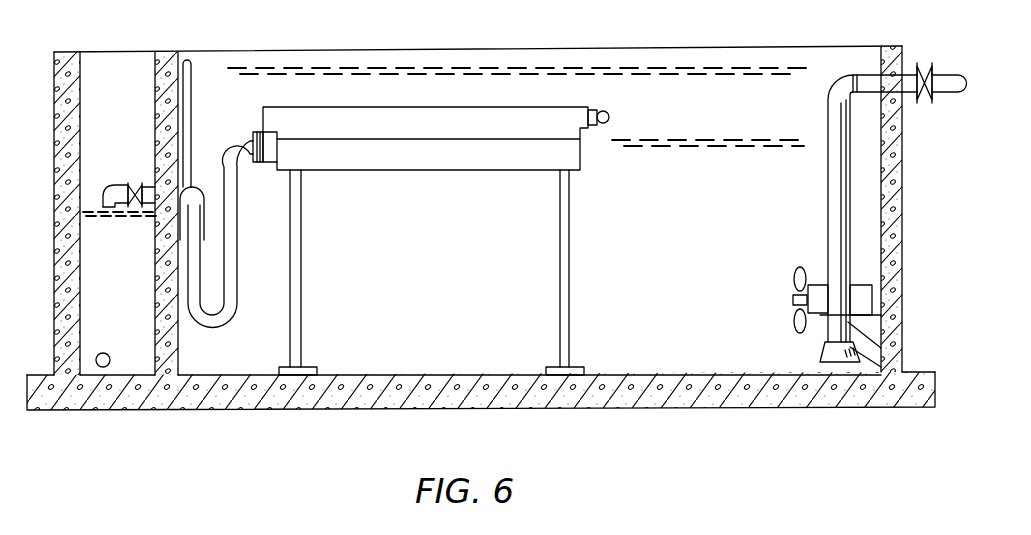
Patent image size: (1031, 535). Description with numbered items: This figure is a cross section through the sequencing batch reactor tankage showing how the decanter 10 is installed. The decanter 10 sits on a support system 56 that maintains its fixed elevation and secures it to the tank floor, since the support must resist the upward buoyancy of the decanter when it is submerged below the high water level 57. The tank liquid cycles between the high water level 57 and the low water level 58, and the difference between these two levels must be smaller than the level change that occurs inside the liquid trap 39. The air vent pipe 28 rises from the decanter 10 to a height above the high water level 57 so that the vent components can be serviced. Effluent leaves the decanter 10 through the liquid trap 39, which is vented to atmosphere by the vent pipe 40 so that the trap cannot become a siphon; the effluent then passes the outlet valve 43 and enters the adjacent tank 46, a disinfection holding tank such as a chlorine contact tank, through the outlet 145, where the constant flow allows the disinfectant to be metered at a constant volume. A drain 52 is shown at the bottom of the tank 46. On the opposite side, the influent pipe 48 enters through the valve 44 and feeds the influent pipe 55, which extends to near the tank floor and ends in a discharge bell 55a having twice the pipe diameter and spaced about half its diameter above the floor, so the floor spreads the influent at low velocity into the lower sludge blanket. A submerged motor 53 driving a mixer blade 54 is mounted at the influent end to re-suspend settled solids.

The decanter 10 is at (440, 99).
The air vent pipe 28 is at (253, 135).
The liquid trap 39 is at (231, 270).
The vent pipe 40 is at (193, 104).
The outlet valve 43 is at (141, 204).
The valve 44 is at (923, 75).
The tank 46 is at (95, 297).
The influent pipe 48 is at (962, 82).
The drain opening 52 is at (114, 346).
The submerged motor 53 is at (866, 303).
The mixer blade 54 is at (793, 290).
The influent pipe 55 is at (835, 240).
The discharge bell 55a is at (826, 350).
The support system 56 is at (297, 280).
The high water level 57 is at (763, 68).
The low water level 58 is at (758, 142).
The outlet 145 is at (108, 192).